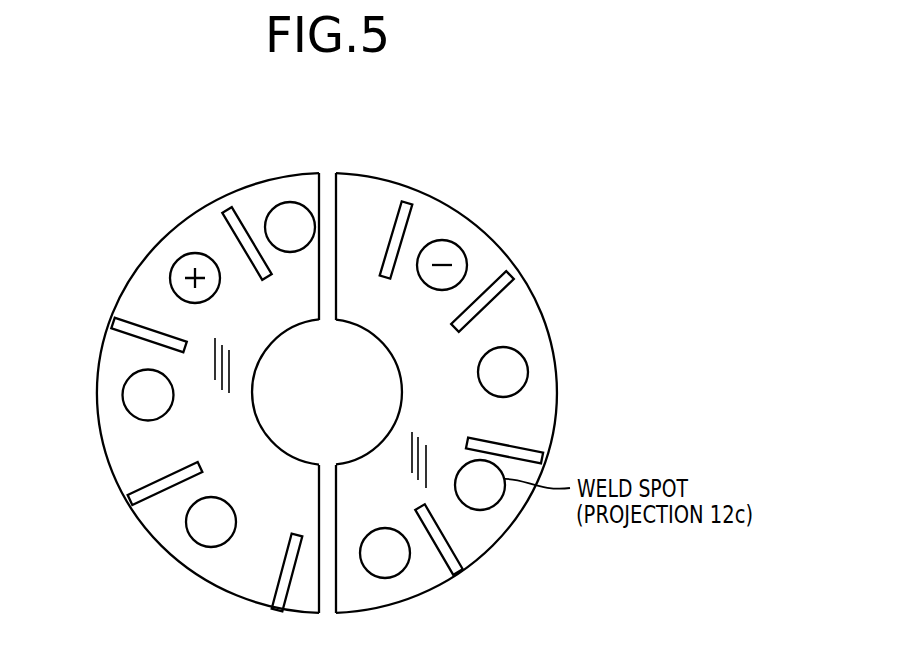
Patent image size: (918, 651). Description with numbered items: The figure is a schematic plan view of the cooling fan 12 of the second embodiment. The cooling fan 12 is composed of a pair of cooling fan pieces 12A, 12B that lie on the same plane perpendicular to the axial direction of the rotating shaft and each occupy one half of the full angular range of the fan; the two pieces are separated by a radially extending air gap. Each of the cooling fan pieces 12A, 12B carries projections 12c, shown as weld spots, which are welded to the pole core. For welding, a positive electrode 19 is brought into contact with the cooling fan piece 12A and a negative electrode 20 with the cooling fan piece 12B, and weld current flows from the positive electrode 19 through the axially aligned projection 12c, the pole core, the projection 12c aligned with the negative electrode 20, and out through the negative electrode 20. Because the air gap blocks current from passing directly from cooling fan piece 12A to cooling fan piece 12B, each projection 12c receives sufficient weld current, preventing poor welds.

The cooling fan 12 is at (383, 126).
The cooling fan piece 12A is at (298, 187).
The cooling fan piece 12B is at (350, 188).
The projection 12c is at (329, 585).
The positive electrode 19 is at (188, 260).
The negative electrode 20 is at (447, 253).